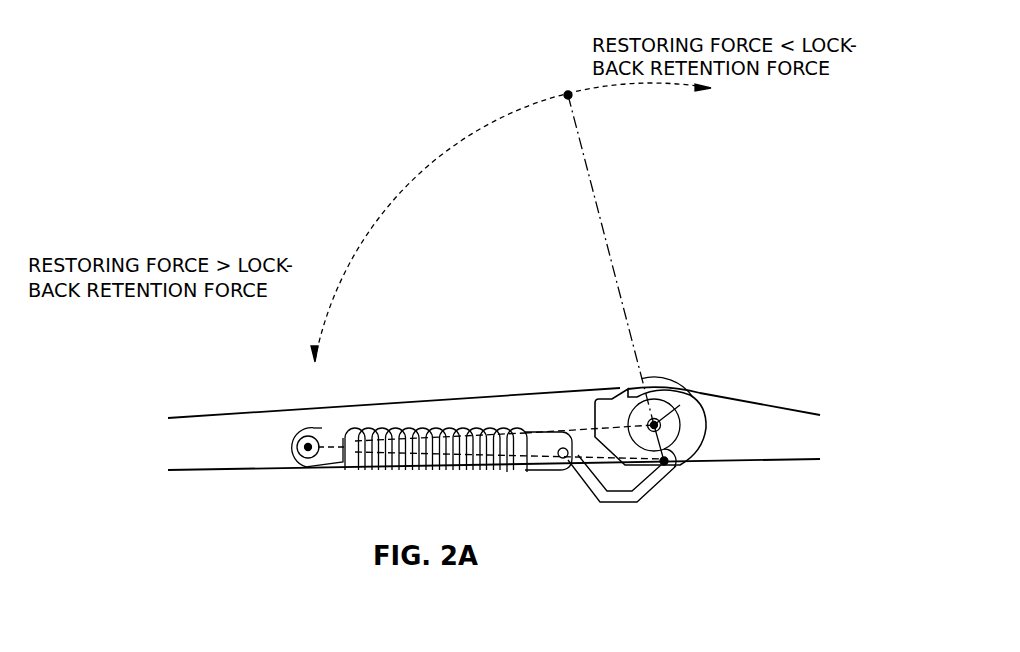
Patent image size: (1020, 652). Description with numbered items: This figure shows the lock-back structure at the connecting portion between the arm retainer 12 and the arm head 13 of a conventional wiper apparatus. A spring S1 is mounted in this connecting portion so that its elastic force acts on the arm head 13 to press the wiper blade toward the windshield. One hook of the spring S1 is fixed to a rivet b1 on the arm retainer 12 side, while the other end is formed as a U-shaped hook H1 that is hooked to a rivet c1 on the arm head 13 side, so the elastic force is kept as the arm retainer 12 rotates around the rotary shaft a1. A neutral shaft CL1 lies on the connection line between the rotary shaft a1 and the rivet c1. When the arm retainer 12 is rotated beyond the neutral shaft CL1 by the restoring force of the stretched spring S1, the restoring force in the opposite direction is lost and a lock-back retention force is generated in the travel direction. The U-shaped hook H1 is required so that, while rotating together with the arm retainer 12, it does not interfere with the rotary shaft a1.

The arm retainer 12 is at (248, 423).
The arm head 13 is at (776, 417).
The spring S1 is at (445, 430).
The rotary shaft a1 is at (677, 410).
The rivet b1 is at (318, 447).
The rivet c1 is at (677, 465).
The neutral shaft CL1 is at (597, 203).
The U-shaped hook H1 is at (655, 480).